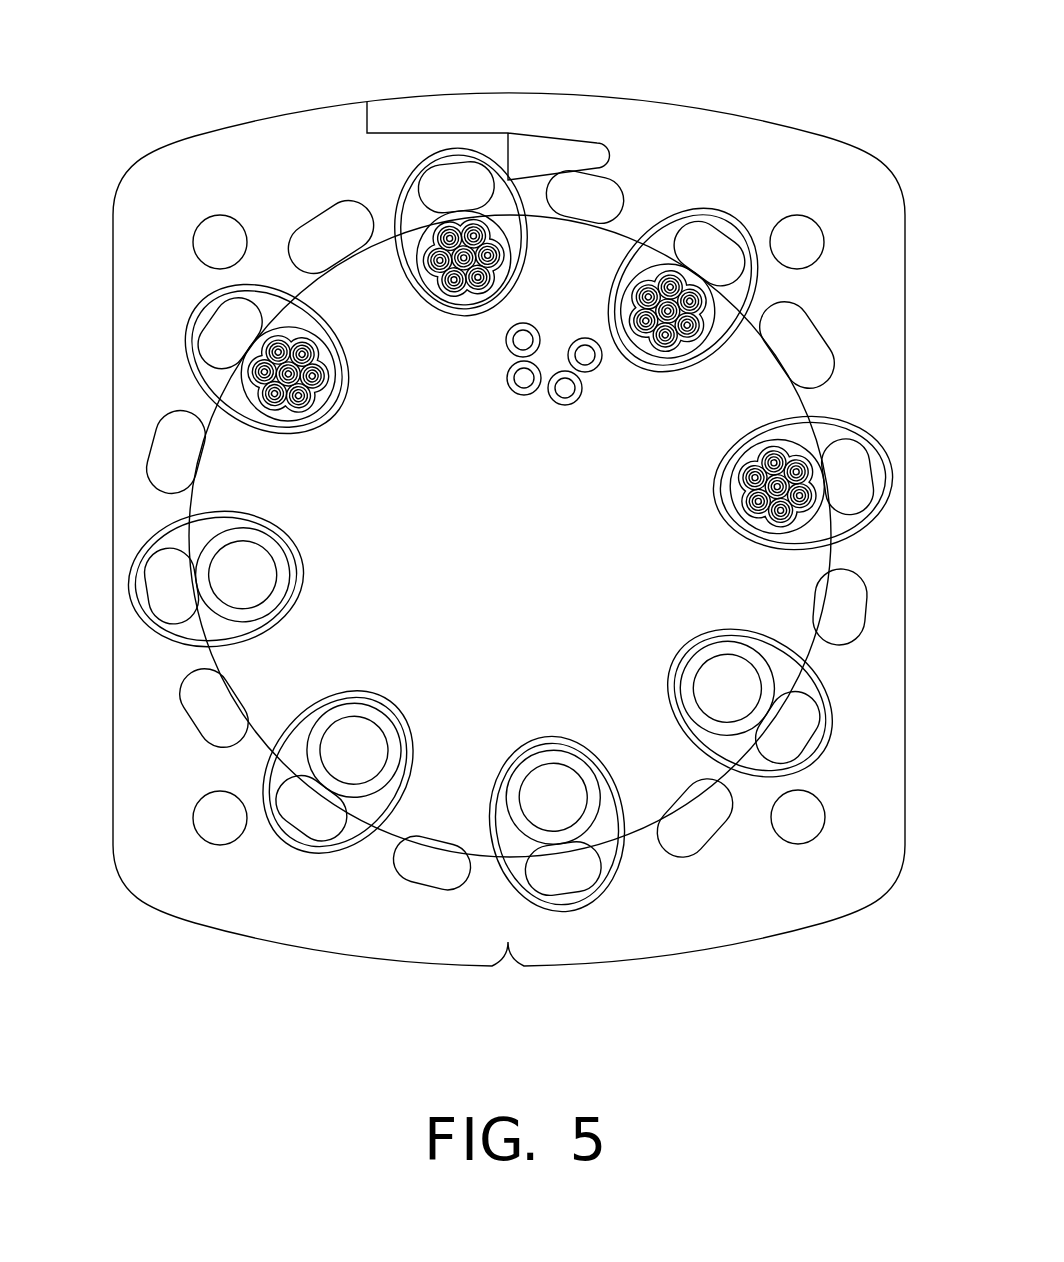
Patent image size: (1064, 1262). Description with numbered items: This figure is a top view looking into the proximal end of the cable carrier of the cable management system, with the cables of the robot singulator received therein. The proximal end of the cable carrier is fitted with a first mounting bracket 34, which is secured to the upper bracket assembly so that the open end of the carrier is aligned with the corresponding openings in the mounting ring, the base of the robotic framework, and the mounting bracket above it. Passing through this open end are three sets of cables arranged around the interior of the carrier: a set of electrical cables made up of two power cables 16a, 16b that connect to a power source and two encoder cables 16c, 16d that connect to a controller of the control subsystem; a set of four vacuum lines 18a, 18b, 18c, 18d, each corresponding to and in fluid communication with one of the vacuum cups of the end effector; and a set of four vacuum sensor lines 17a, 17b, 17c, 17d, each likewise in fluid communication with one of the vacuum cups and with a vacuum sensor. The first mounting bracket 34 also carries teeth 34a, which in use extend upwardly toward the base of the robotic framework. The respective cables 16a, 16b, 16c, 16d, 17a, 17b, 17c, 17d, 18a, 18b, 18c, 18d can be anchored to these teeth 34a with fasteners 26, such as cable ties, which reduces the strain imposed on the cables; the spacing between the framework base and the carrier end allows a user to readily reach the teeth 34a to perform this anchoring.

The power cable 16a is at (423, 235).
The power cable 16b is at (648, 265).
The encoder cable 16c is at (240, 388).
The encoder cable 16d is at (820, 543).
The vacuum sensor line 17a is at (507, 340).
The vacuum sensor line 17b is at (525, 395).
The vacuum sensor line 17c is at (572, 405).
The vacuum sensor line 17d is at (597, 365).
The vacuum line 18a is at (227, 613).
The vacuum line 18b is at (357, 788).
The vacuum line 18c is at (590, 813).
The vacuum line 18d is at (695, 658).
The fasteners 26 is at (753, 287).
The first mounting bracket 34 is at (813, 160).
The teeth 34a is at (703, 823).